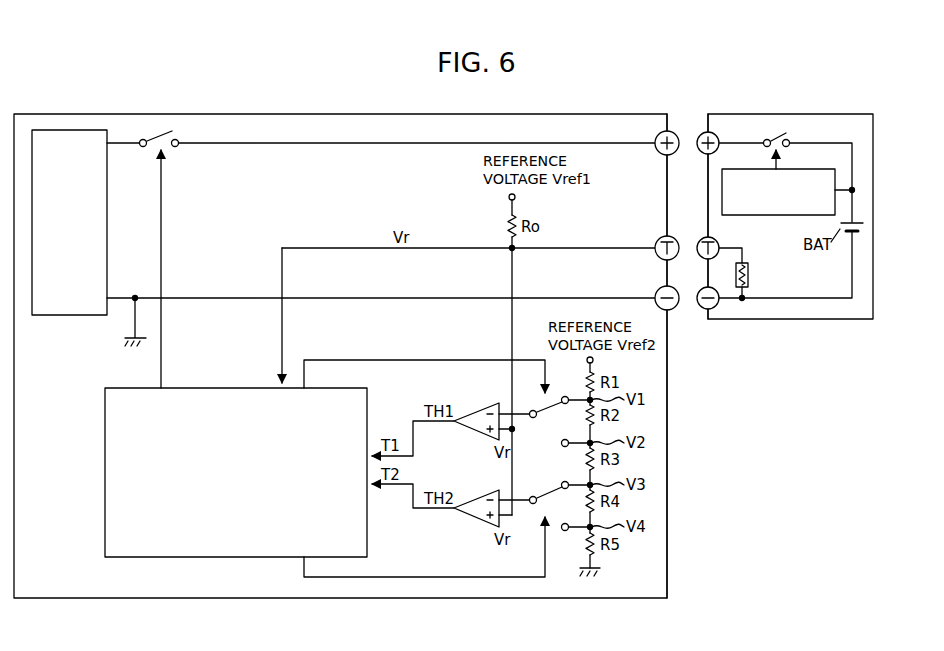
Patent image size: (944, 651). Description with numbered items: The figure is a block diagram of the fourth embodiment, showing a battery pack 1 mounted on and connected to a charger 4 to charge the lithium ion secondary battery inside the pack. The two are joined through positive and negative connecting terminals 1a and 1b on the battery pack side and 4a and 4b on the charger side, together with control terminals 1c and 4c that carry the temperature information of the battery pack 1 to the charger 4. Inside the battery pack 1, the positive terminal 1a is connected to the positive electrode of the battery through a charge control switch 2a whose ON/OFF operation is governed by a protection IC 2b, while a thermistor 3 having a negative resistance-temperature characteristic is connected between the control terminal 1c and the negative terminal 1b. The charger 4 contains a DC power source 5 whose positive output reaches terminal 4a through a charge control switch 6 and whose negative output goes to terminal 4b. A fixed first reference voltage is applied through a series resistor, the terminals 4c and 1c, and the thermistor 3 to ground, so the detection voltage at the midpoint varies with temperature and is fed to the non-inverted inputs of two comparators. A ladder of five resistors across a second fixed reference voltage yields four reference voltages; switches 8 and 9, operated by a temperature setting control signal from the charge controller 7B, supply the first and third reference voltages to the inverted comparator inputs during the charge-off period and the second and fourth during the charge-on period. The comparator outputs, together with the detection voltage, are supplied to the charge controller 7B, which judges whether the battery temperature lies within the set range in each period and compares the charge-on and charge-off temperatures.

The battery pack 1 is at (769, 114).
The positive connecting terminal 1a is at (702, 133).
The negative connecting terminal 1b is at (702, 310).
The control terminal 1c is at (702, 237).
The charge control switch 2a is at (790, 147).
The protection IC 2b is at (759, 218).
The thermistor 3 is at (752, 266).
The charger 4 is at (565, 114).
The positive connecting terminal 4a is at (658, 155).
The negative connecting terminal 4b is at (654, 294).
The control terminal 4c is at (655, 254).
The DC power source 5 is at (108, 216).
The charge control switch 6 is at (174, 153).
The charge controller 7B is at (240, 385).
The switch 8 is at (536, 407).
The switch 9 is at (536, 491).